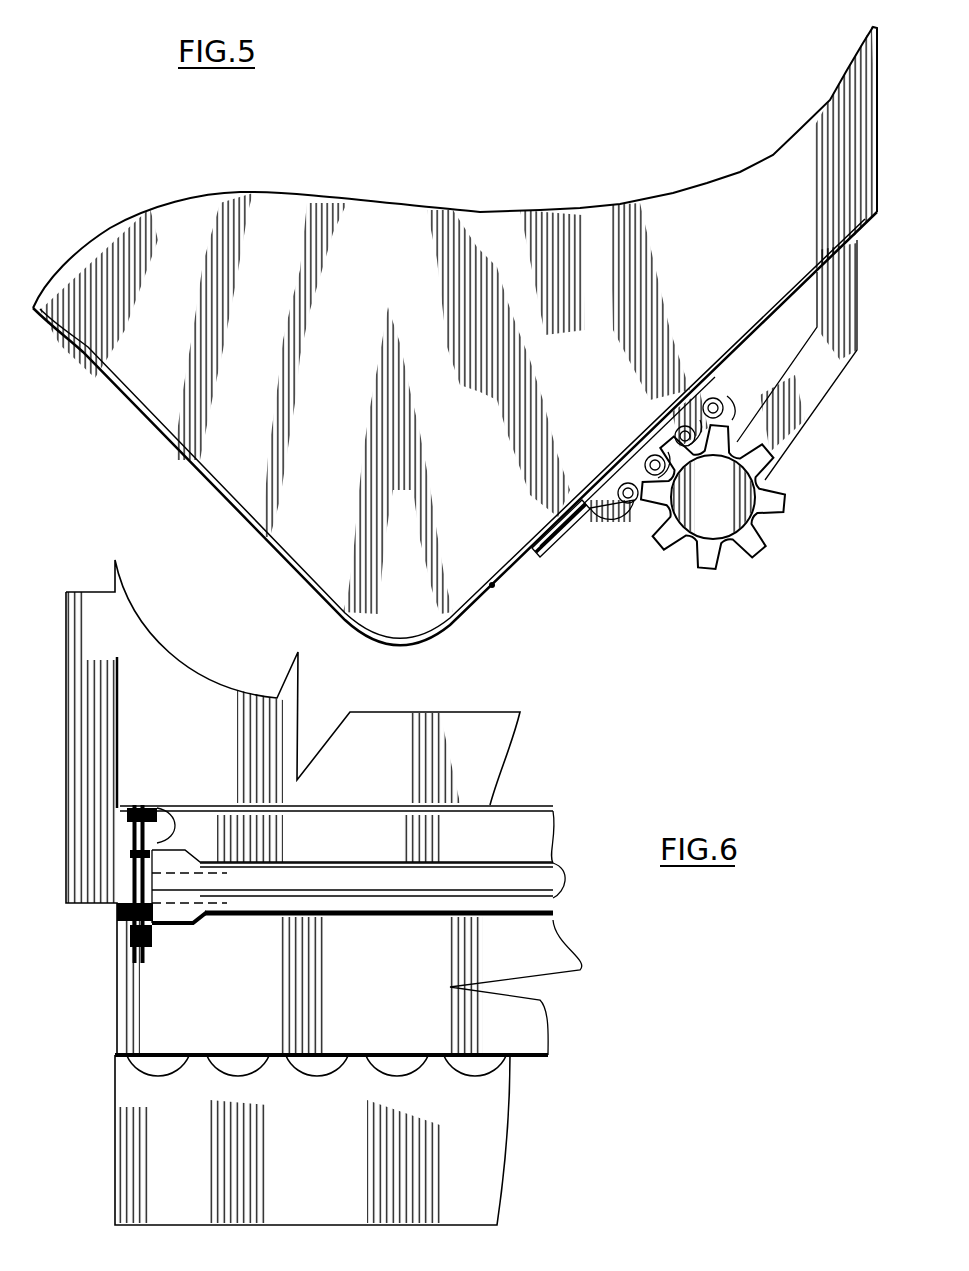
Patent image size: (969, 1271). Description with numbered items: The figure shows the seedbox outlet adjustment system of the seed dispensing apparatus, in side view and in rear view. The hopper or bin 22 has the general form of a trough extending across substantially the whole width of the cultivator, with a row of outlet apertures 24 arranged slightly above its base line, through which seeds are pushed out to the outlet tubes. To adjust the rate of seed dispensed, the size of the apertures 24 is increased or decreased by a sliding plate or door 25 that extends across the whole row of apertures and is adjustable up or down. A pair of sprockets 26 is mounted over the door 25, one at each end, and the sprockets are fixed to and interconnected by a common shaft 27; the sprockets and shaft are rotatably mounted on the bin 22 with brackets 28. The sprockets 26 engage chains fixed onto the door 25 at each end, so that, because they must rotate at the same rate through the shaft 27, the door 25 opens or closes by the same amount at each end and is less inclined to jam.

In FIG. 5, the bin 22 is at (797, 227).
In FIG. 5, the apertures 24 is at (534, 545).
In FIG. 6, the apertures 24 is at (377, 1082).
In FIG. 5, the door 25 is at (560, 527).
In FIG. 6, the door 25 is at (362, 990).
In FIG. 5, the sprocket 26 is at (728, 512).
In FIG. 6, the sprocket 26 is at (160, 810).
In FIG. 6, the shaft 27 is at (318, 883).
In FIG. 5, the brackets 28 is at (798, 397).
In FIG. 6, the brackets 28 is at (93, 763).